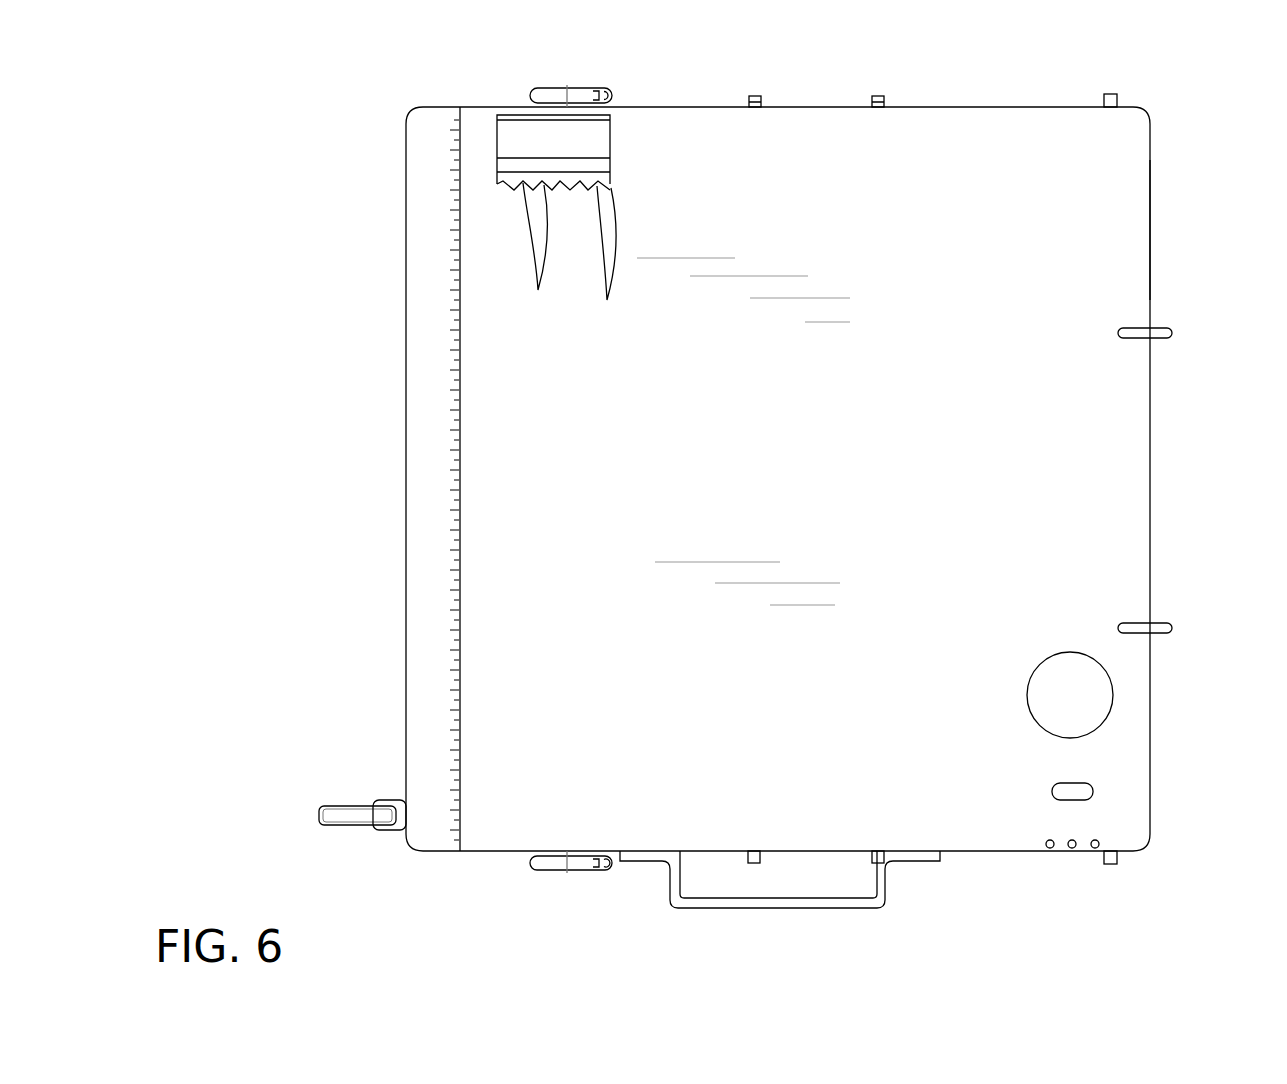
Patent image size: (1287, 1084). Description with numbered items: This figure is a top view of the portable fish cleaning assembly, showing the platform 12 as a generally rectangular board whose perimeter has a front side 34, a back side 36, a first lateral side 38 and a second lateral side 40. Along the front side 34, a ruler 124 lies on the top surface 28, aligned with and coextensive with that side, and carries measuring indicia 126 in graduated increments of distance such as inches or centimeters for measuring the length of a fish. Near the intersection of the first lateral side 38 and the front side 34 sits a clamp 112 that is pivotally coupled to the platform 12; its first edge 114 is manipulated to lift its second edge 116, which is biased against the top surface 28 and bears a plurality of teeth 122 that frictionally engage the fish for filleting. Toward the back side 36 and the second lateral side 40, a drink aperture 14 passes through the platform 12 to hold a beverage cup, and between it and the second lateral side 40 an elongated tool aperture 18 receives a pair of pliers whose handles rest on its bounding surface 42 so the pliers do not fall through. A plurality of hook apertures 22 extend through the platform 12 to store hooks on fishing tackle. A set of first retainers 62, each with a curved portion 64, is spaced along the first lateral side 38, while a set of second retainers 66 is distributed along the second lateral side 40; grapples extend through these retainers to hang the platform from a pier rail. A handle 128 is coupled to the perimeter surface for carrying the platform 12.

The platform 12 is at (1150, 108).
The drink aperture 14 is at (1073, 684).
The tool aperture 18 is at (1095, 780).
The hook apertures 22 is at (1092, 849).
The top surface 28 is at (1118, 226).
The front side 34 is at (1150, 436).
The back side 36 is at (405, 532).
The first lateral side 38 is at (783, 108).
The second lateral side 40 is at (500, 851).
The bounding surface 42 is at (1075, 790).
The first retainers 62 is at (762, 96).
The curved portion 64 is at (749, 101).
The second retainers 66 is at (755, 864).
The clamp 112 is at (529, 261).
The first edge 114 is at (517, 116).
The second edge 116 is at (498, 182).
The teeth 122 is at (632, 264).
The ruler 124 is at (413, 660).
The measuring indicia 126 is at (400, 585).
The handle 128 is at (690, 906).